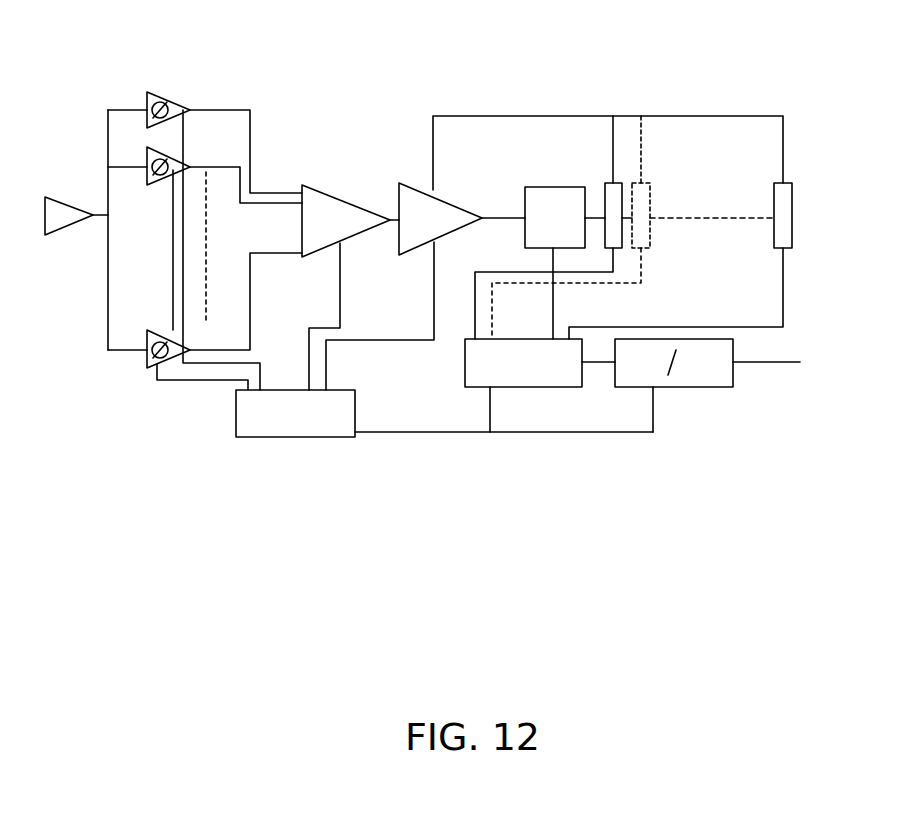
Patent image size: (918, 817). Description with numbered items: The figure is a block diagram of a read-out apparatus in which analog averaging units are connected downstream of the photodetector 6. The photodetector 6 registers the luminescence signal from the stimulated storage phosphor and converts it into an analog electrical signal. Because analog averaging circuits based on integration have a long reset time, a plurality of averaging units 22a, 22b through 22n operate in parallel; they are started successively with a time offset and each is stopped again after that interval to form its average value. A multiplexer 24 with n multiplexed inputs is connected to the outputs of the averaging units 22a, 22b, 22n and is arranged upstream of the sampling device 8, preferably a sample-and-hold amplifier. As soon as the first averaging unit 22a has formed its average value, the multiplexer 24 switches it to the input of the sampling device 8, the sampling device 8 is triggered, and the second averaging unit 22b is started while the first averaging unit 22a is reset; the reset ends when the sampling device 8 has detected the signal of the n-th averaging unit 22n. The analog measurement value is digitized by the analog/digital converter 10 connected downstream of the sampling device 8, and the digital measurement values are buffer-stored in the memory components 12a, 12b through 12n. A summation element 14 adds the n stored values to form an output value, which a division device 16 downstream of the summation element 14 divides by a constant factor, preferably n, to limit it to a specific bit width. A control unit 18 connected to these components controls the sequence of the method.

The photodetector 6 is at (70, 230).
The sampling device 8 is at (413, 200).
The analog/digital converter 10 is at (542, 203).
The memory component 12a is at (615, 188).
The memory component 12b is at (641, 180).
The memory component 12n is at (792, 205).
The summation element 14 is at (538, 375).
The division device 16 is at (705, 375).
The control unit 18 is at (305, 437).
The first averaging unit 22a is at (147, 90).
The second averaging unit 22b is at (187, 137).
The n-th averaging unit 22n is at (150, 370).
The multiplexer 24 is at (325, 210).